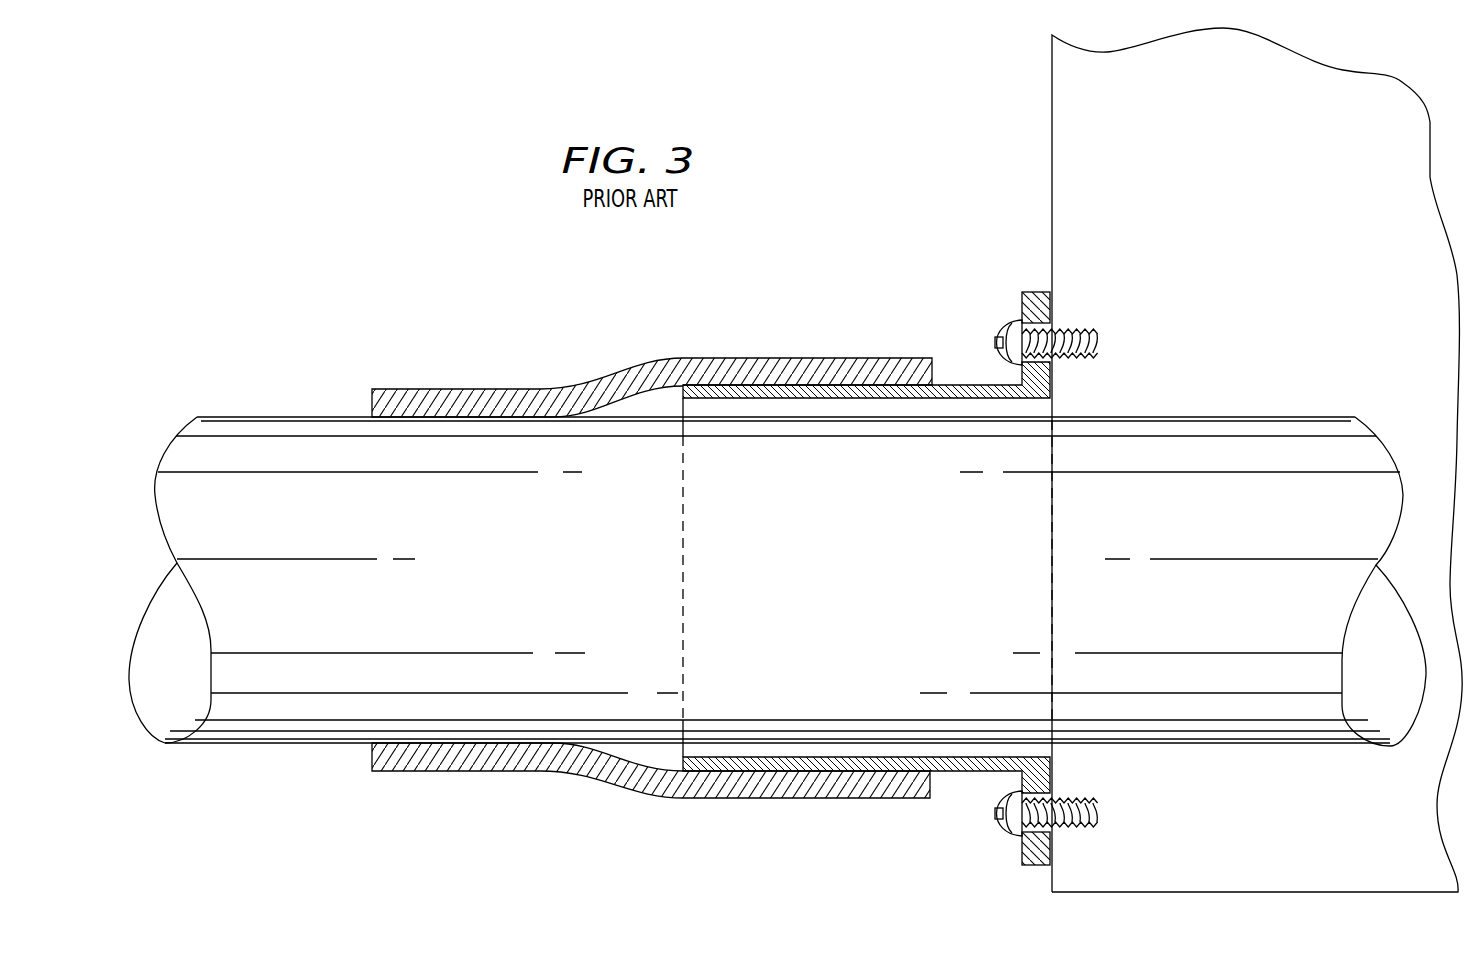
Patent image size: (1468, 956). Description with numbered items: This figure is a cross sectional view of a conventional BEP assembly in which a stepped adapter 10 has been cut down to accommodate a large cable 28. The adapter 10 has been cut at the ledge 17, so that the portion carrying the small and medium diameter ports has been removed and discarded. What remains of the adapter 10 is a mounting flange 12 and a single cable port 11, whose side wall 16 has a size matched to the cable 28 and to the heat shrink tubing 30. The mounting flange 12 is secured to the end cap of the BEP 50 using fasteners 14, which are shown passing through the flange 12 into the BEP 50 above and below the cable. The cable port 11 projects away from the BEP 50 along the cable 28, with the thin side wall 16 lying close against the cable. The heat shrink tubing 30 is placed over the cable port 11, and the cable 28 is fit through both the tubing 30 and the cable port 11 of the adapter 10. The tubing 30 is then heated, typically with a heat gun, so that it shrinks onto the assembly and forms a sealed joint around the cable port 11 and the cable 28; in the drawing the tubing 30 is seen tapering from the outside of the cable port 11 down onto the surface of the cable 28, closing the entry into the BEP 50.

The adapter 10 is at (890, 551).
The cable port 11 is at (806, 386).
The mounting flange 12 is at (1022, 300).
The fasteners 14 is at (1000, 330).
The side wall 16 is at (963, 385).
The ledge 17 is at (699, 392).
The cable 28 is at (245, 417).
The heat shrink tubing 30 is at (465, 388).
The BEP 50 is at (1052, 100).